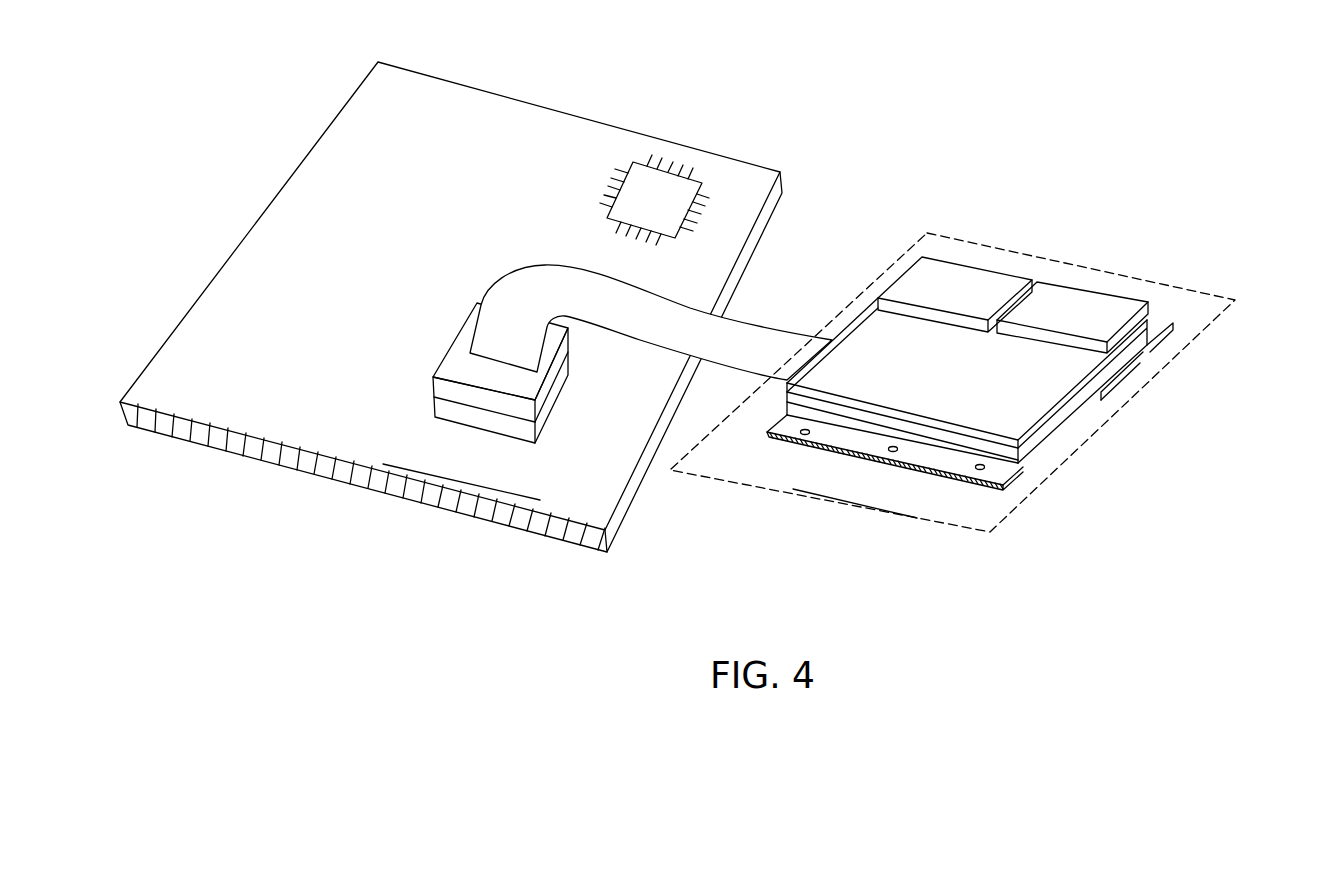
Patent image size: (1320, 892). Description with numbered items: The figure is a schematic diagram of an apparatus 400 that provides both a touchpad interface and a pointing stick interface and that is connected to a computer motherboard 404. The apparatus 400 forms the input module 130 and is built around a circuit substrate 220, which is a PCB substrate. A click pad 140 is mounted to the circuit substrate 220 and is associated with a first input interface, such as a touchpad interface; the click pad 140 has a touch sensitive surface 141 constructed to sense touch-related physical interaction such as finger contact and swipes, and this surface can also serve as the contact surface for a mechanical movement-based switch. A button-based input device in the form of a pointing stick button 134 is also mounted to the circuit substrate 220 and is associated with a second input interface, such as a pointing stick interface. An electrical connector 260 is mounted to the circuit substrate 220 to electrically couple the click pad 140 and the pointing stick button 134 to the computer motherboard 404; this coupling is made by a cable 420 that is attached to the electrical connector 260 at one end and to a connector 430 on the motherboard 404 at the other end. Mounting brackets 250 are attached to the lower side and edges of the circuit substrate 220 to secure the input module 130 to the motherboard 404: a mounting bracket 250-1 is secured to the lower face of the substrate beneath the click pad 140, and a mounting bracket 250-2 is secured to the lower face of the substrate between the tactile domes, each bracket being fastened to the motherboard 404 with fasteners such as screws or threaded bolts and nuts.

The computer motherboard 404 is at (589, 120).
The connector 430 is at (433, 398).
The cable 420 is at (653, 346).
The apparatus 400 is at (1000, 526).
The input module 130 is at (902, 238).
The electrical connector 260 is at (860, 313).
The pointing stick button 134 is at (978, 263).
The circuit substrate 220 is at (1108, 378).
The click pad 140 is at (1072, 398).
The touch sensitive surface 141 is at (1027, 417).
The mounting brackets 250 is at (1026, 390).
The mounting bracket 250-1 is at (837, 452).
The mounting bracket 250-2 is at (1178, 306).